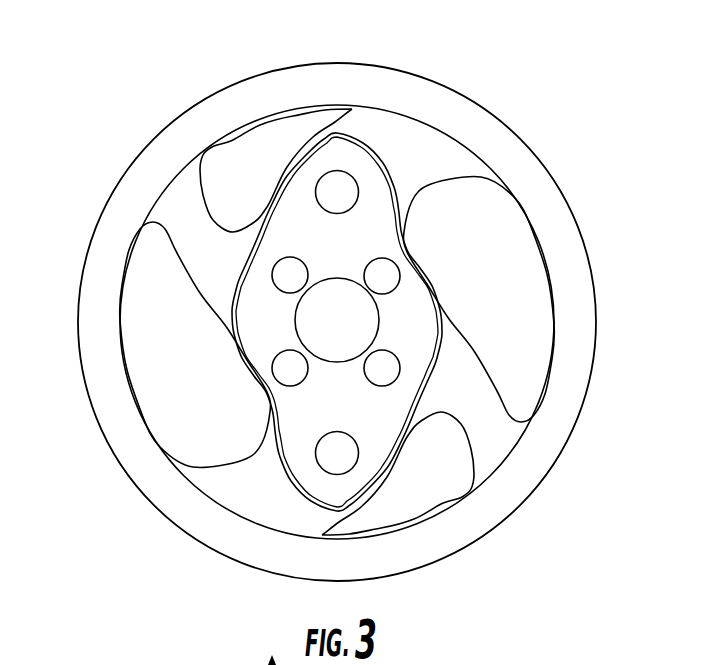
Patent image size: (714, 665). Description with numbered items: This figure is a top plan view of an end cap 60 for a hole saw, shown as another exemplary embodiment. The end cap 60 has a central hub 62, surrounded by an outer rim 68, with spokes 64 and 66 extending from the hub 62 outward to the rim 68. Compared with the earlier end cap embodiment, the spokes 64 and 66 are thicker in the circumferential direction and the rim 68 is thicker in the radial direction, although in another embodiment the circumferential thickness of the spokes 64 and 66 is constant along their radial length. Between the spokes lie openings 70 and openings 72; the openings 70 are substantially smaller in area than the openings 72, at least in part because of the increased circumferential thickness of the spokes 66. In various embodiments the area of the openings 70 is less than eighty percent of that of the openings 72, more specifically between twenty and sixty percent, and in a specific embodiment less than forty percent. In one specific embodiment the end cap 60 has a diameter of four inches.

The end cap 60 is at (583, 165).
The hub 62 is at (347, 408).
The spokes 64 is at (177, 197).
The spokes 66 is at (458, 137).
The rim 68 is at (277, 92).
The openings 70 is at (250, 140).
The openings 72 is at (520, 315).